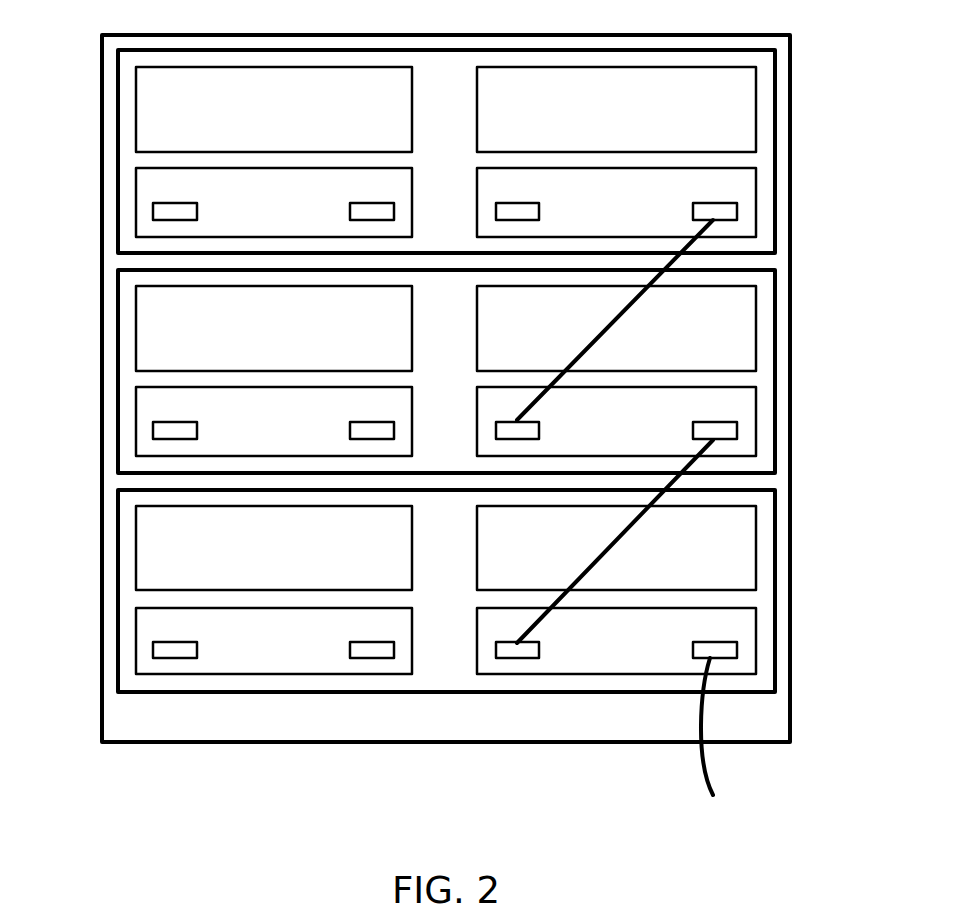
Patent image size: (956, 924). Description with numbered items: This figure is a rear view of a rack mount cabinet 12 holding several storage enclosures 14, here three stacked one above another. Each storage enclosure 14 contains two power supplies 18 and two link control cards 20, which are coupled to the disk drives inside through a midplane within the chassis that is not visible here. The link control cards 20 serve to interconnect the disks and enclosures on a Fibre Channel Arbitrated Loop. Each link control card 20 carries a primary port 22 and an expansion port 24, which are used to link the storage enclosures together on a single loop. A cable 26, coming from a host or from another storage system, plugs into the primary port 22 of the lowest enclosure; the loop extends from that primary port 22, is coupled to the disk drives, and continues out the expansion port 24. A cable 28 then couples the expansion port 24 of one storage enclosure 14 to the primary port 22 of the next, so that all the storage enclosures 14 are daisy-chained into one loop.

The rack mount cabinet 12 is at (101, 210).
The storage enclosure 14 is at (114, 424).
The power supply 18 is at (133, 541).
The link control card 20 is at (133, 637).
The primary port 22 is at (350, 652).
The expansion port 24 is at (197, 652).
The cable 26 is at (708, 777).
The cable 28 is at (613, 544).